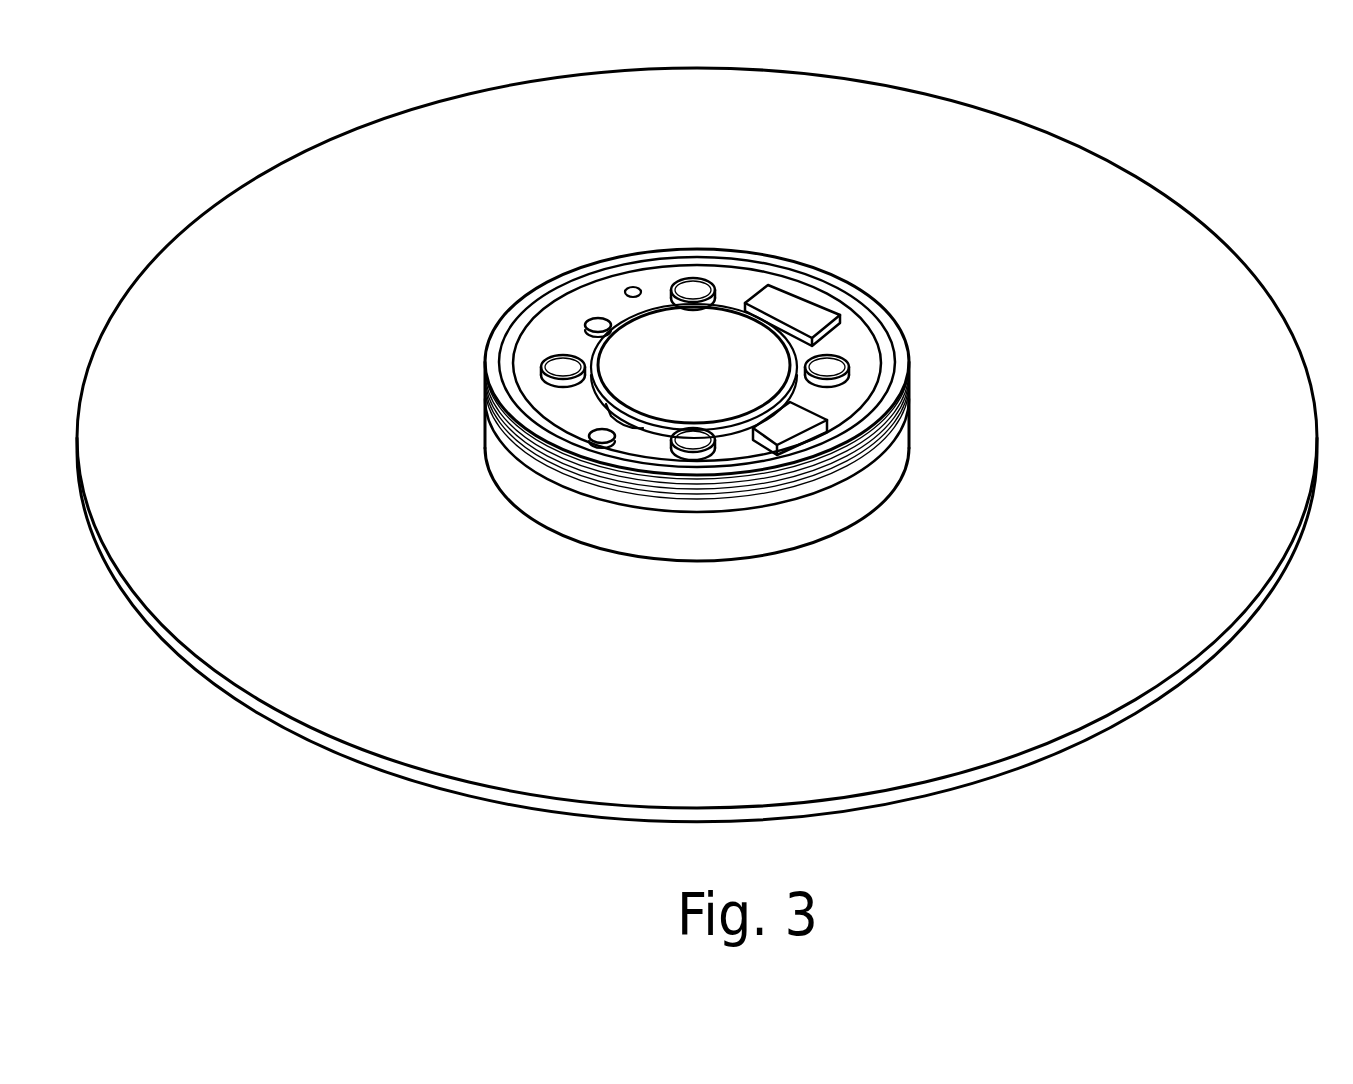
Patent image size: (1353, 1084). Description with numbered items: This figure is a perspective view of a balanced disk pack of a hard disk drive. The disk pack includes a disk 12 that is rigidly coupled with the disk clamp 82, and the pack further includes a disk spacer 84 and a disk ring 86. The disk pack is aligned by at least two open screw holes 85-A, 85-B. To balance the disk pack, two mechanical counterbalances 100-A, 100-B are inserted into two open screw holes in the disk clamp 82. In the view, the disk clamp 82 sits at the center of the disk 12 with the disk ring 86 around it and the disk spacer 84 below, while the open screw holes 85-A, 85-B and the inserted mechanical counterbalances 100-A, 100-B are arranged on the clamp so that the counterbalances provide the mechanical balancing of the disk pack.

The disk 12 is at (1137, 491).
The disk spacer 84 is at (714, 551).
The disk ring 86 is at (885, 346).
The disk clamp 82 is at (695, 369).
The open screw hole 85-A is at (592, 320).
The open screw hole 85-B is at (601, 443).
The mechanical counterbalance 100-A is at (797, 302).
The mechanical counterbalance 100-B is at (797, 422).